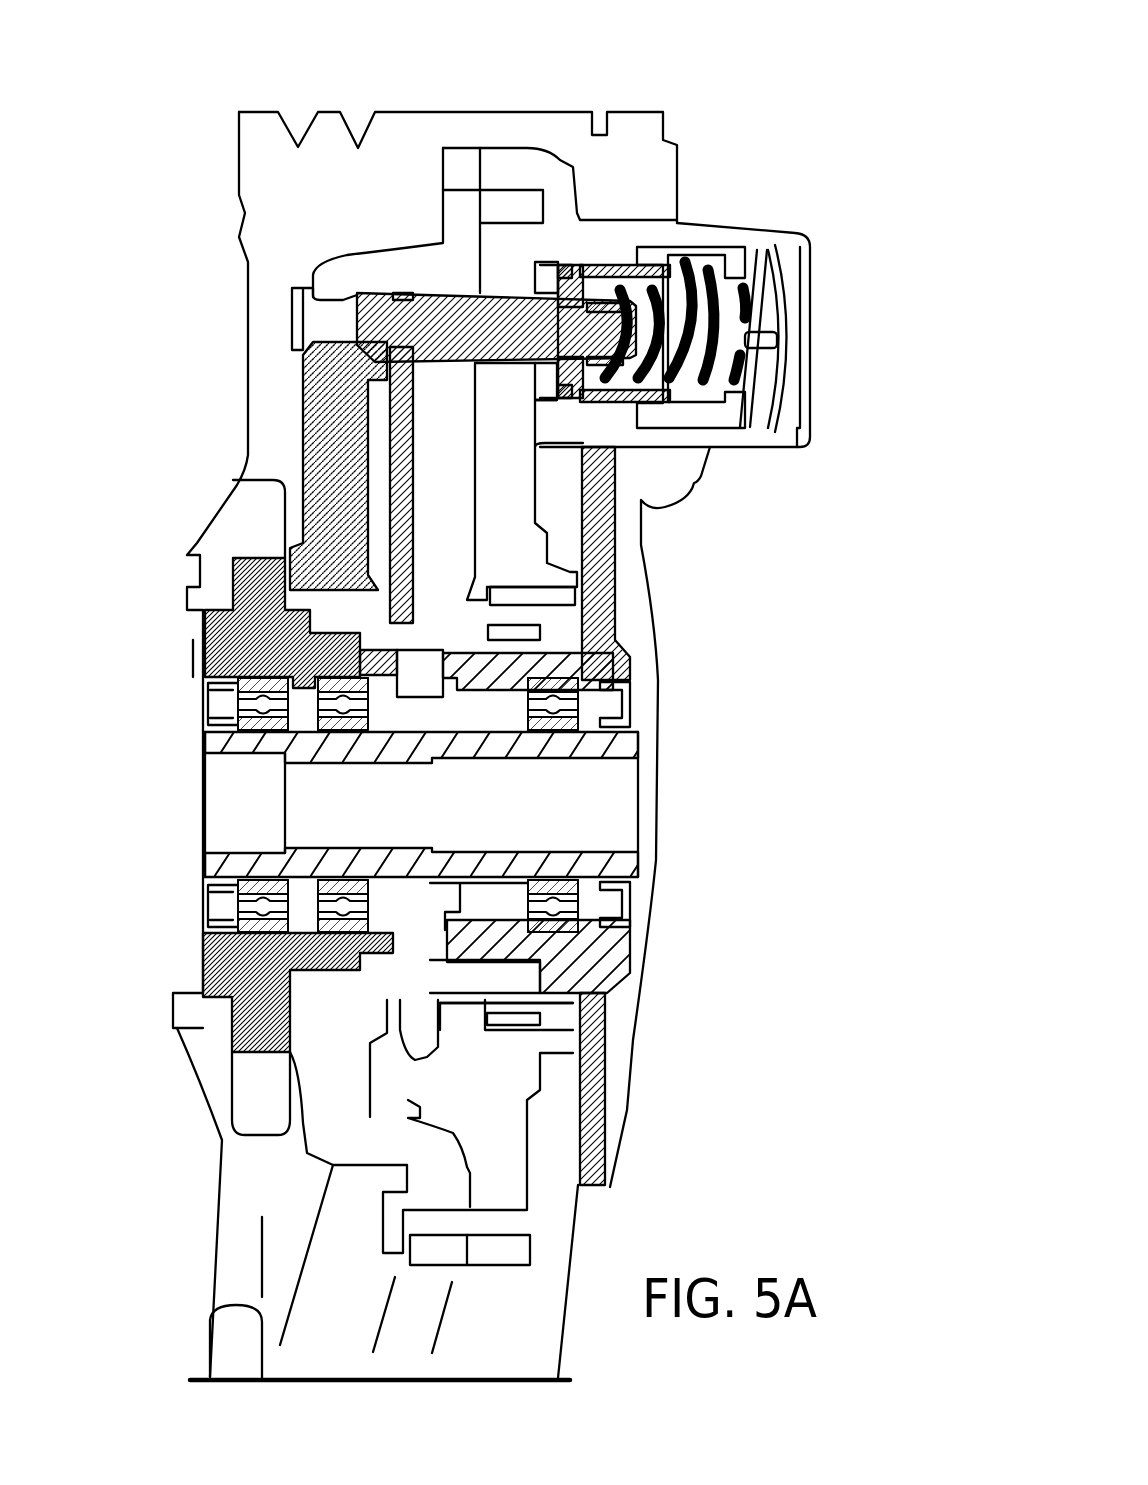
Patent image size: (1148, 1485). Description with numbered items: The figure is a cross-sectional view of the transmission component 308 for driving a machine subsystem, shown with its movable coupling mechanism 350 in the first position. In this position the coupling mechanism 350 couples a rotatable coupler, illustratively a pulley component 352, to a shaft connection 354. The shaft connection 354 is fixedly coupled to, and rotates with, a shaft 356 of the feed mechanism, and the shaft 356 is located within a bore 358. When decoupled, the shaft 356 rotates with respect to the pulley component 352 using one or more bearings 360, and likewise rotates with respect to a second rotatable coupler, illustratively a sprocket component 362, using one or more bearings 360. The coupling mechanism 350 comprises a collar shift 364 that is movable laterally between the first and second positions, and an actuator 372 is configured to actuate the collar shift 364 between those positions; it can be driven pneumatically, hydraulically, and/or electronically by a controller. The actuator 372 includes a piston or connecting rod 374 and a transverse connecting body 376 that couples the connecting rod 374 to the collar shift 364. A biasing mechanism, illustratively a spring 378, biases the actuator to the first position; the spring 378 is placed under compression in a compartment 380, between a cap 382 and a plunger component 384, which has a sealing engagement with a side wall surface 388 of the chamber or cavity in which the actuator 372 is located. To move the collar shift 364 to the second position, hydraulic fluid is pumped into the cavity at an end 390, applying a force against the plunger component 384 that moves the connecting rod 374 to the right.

The transmission component 308 is at (652, 76).
The coupling mechanism 350 is at (279, 402).
The pulley component 352 is at (215, 636).
The shaft connection 354 is at (430, 665).
The shaft 356 is at (590, 758).
The bore 358 is at (145, 838).
The bearings 360 is at (553, 883).
The sprocket component 362 is at (587, 670).
The collar shift 364 is at (393, 630).
The actuator 372 is at (850, 256).
The connecting rod 374 is at (496, 322).
The transverse connecting body 376 is at (407, 462).
The spring 378 is at (718, 365).
The compartment 380 is at (704, 245).
The cap 382 is at (753, 323).
The plunger component 384 is at (580, 267).
The side wall surface 388 is at (613, 262).
The end 390 is at (532, 384).